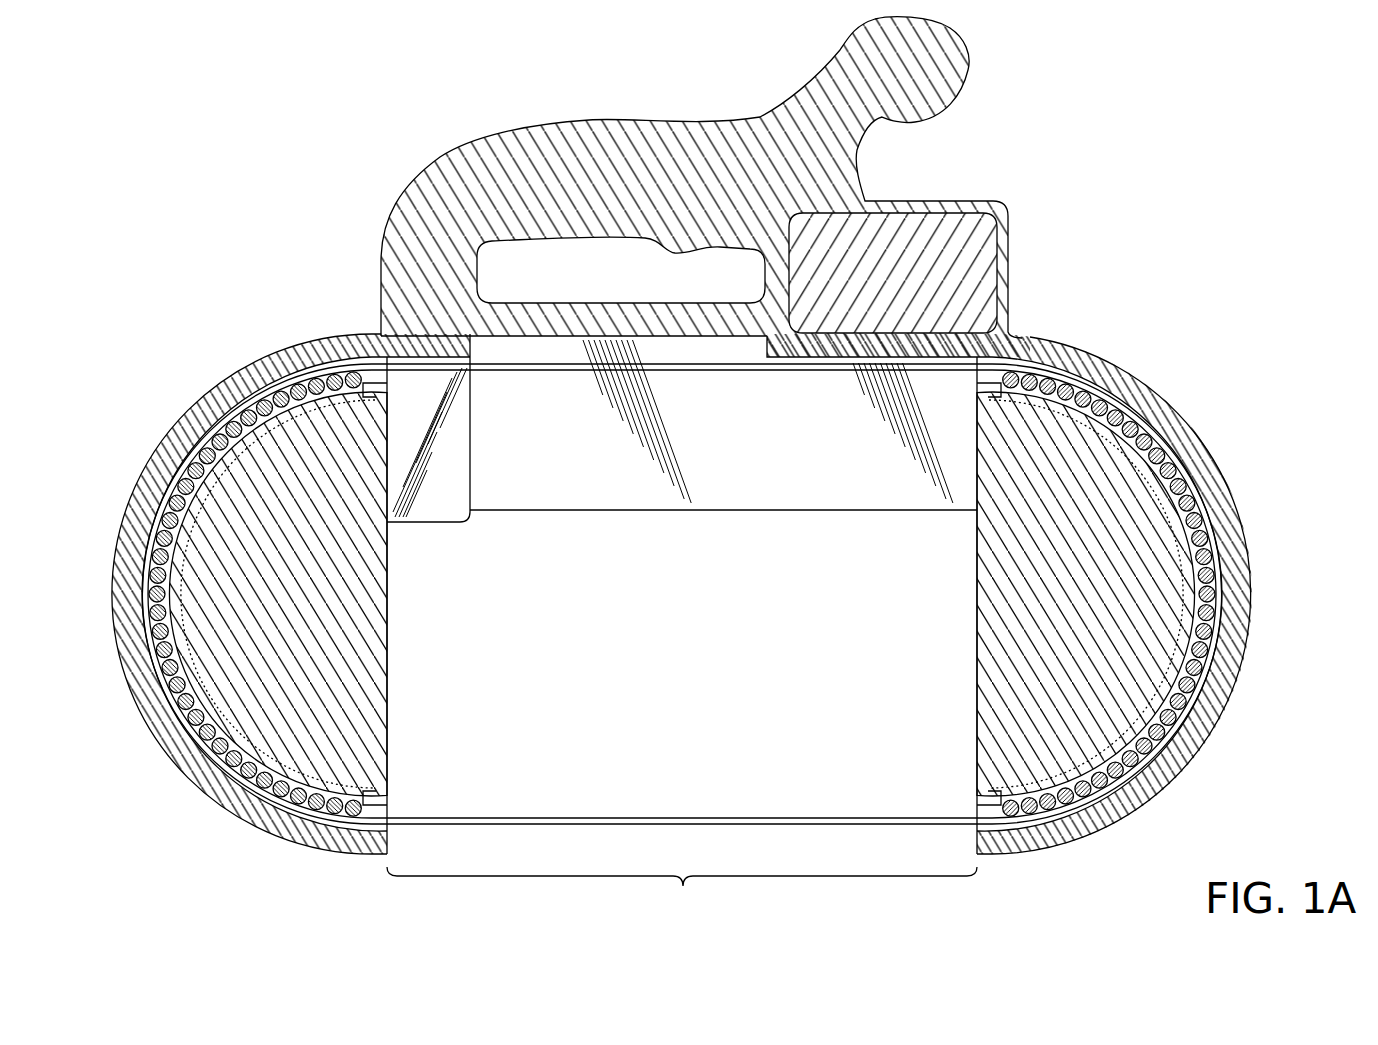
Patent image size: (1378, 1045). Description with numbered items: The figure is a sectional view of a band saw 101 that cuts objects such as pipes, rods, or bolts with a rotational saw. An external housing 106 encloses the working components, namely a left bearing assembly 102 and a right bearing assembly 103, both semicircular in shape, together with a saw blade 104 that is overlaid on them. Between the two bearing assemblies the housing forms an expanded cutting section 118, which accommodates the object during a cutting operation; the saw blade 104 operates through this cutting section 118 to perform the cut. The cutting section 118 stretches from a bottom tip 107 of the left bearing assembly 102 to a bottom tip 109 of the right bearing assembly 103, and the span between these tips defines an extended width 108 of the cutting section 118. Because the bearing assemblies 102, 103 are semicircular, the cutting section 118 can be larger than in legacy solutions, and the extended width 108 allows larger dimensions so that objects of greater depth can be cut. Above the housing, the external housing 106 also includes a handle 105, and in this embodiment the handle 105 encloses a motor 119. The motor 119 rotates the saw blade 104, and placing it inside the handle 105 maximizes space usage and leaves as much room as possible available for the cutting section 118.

The band saw 101 is at (297, 127).
The left bearing assembly 102 is at (190, 678).
The right bearing assembly 103 is at (1174, 678).
The saw blade 104 is at (803, 824).
The handle 105 is at (442, 158).
The external housing 106 is at (1155, 391).
The bottom tip 107 is at (382, 794).
The extended width 108 is at (683, 886).
The bottom tip 109 is at (982, 794).
The cutting section 118 is at (705, 659).
The motor 119 is at (914, 286).